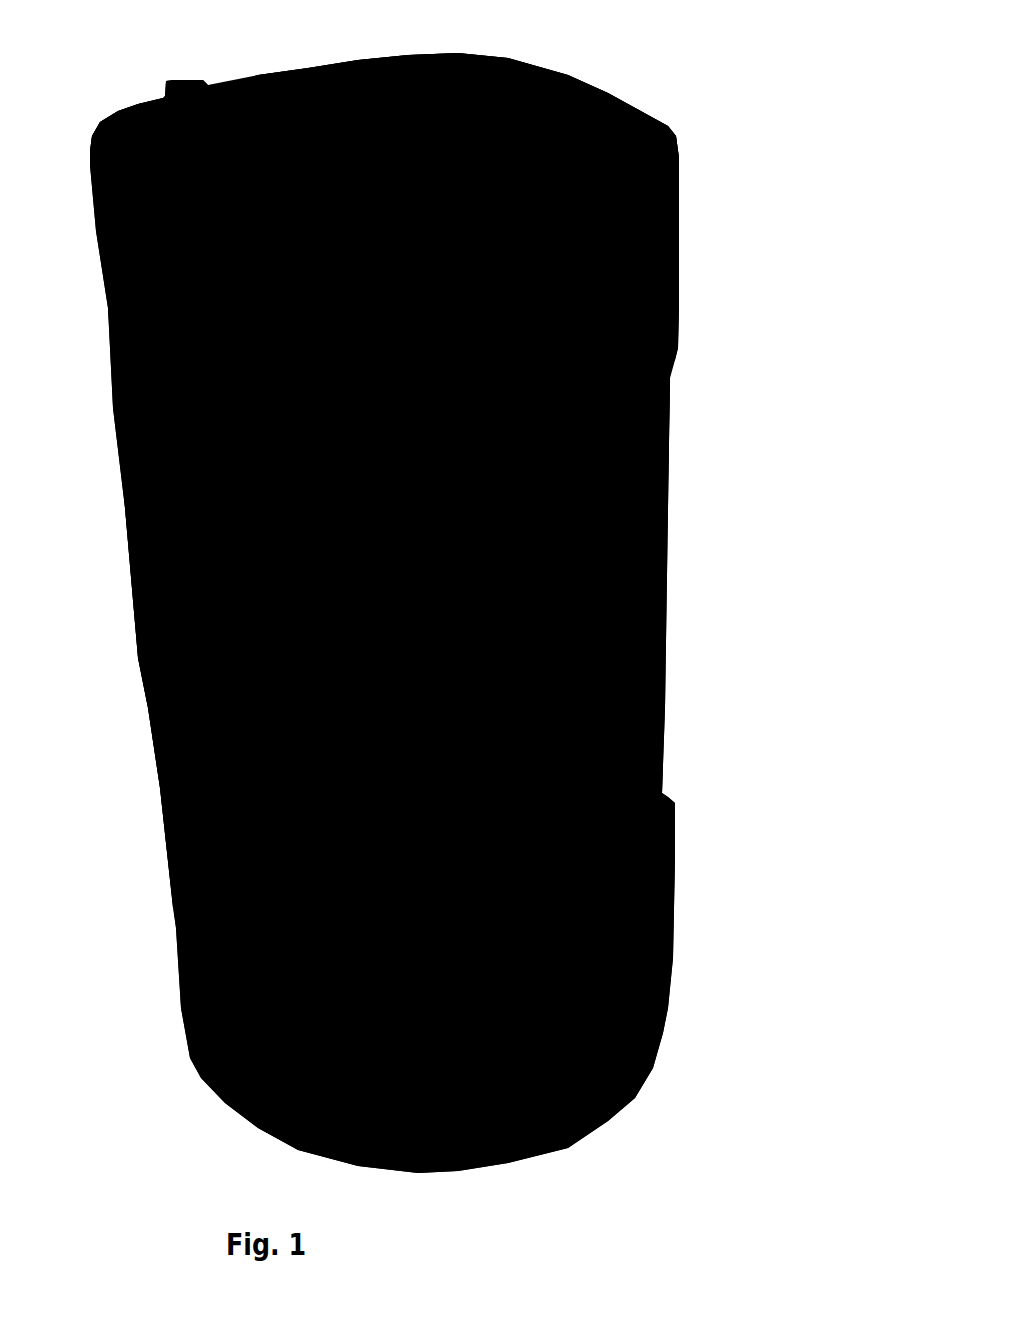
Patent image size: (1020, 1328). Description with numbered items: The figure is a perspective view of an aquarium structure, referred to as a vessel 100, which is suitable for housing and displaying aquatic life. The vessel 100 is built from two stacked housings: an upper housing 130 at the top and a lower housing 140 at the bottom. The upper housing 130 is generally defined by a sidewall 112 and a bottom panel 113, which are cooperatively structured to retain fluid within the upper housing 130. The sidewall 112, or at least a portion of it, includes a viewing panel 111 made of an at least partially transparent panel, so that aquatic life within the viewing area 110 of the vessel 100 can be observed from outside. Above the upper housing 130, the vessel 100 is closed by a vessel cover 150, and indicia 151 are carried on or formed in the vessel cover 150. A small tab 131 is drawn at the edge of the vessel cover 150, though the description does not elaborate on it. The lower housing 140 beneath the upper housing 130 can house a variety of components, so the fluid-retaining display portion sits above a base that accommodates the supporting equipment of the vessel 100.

The vessel 100 is at (822, 158).
The viewing area 110 is at (628, 585).
The viewing panel 111 is at (652, 458).
The sidewall 112 is at (120, 512).
The bottom panel 113 is at (527, 802).
The upper housing 130 is at (668, 300).
The cap tab 131 is at (184, 57).
The lower housing 140 is at (658, 952).
The vessel cover 150 is at (547, 138).
The indicia 151 is at (555, 72).